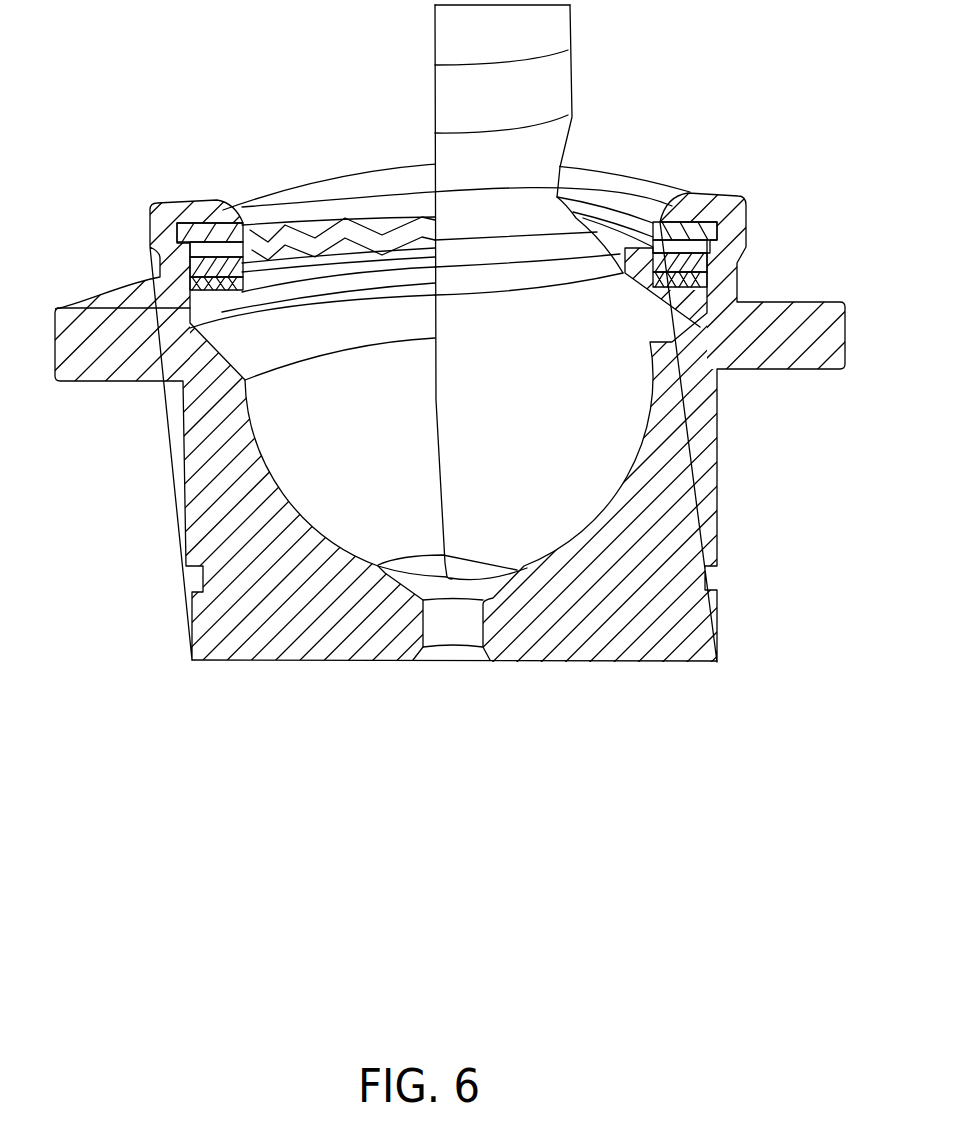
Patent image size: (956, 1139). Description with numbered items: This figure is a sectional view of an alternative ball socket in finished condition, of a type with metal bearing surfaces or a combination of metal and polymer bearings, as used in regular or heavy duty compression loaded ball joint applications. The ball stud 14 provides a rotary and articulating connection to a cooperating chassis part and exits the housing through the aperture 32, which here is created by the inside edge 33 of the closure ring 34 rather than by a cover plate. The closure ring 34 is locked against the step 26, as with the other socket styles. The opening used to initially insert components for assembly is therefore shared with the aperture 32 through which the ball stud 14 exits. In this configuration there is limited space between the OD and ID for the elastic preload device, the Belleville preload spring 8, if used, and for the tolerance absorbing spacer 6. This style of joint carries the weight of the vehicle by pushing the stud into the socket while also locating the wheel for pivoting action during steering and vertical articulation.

The ball stud 14 is at (512, 368).
The step 26 is at (173, 243).
The inside edge 33 is at (273, 219).
The aperture 32 is at (668, 222).
The closure ring 34 is at (693, 232).
The tolerance absorbing spacer 6 is at (677, 250).
The Belleville preload spring 8 is at (707, 277).